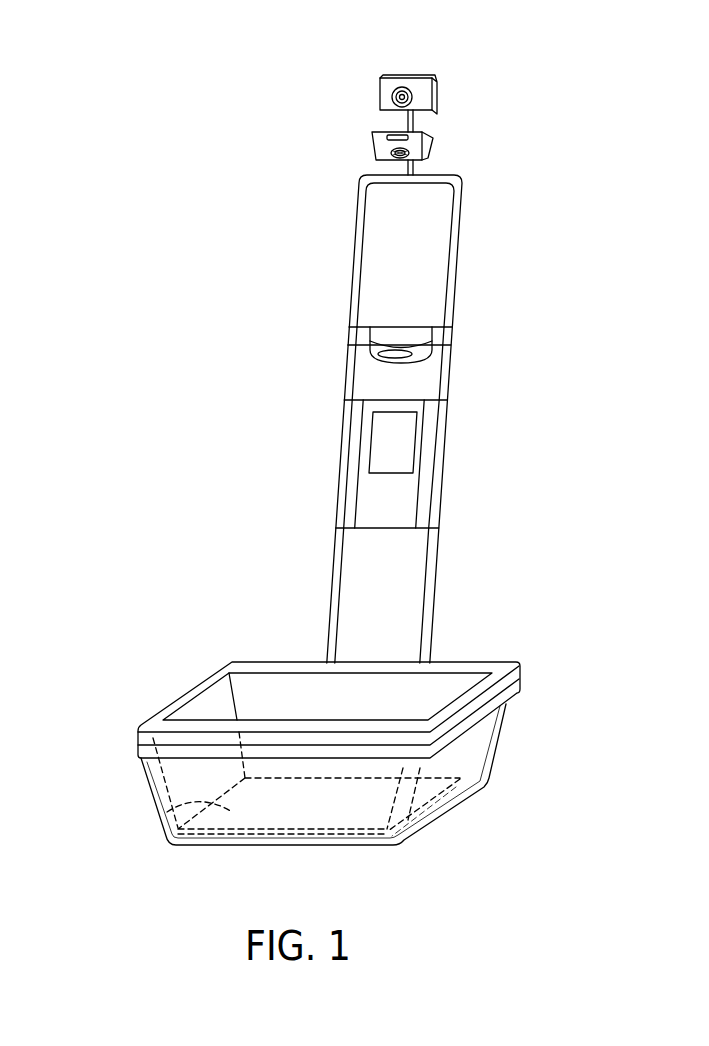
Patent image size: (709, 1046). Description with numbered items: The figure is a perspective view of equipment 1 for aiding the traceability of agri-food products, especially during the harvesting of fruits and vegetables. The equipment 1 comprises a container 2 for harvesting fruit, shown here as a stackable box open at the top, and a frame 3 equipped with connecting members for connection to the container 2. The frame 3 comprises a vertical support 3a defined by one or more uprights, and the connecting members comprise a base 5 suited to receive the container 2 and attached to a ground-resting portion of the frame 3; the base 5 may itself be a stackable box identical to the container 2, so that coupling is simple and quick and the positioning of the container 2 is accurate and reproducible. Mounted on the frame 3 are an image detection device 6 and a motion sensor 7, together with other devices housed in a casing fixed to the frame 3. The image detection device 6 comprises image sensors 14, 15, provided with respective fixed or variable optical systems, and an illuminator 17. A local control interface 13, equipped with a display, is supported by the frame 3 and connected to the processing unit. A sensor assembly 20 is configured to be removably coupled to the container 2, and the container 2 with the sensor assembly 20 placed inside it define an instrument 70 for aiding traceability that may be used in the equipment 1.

The equipment 1 is at (541, 240).
The container 2 is at (152, 722).
The frame 3 is at (308, 265).
The vertical support 3a is at (447, 250).
The base 5 is at (472, 760).
The image detection device 6 is at (358, 112).
The motion sensor 7 is at (400, 333).
The local control interface 13 is at (382, 443).
The image sensor 14 is at (433, 156).
The image sensor 15 is at (436, 90).
The illuminator 17 is at (394, 137).
The sensor assembly 20 is at (167, 812).
The instrument 70 is at (192, 677).